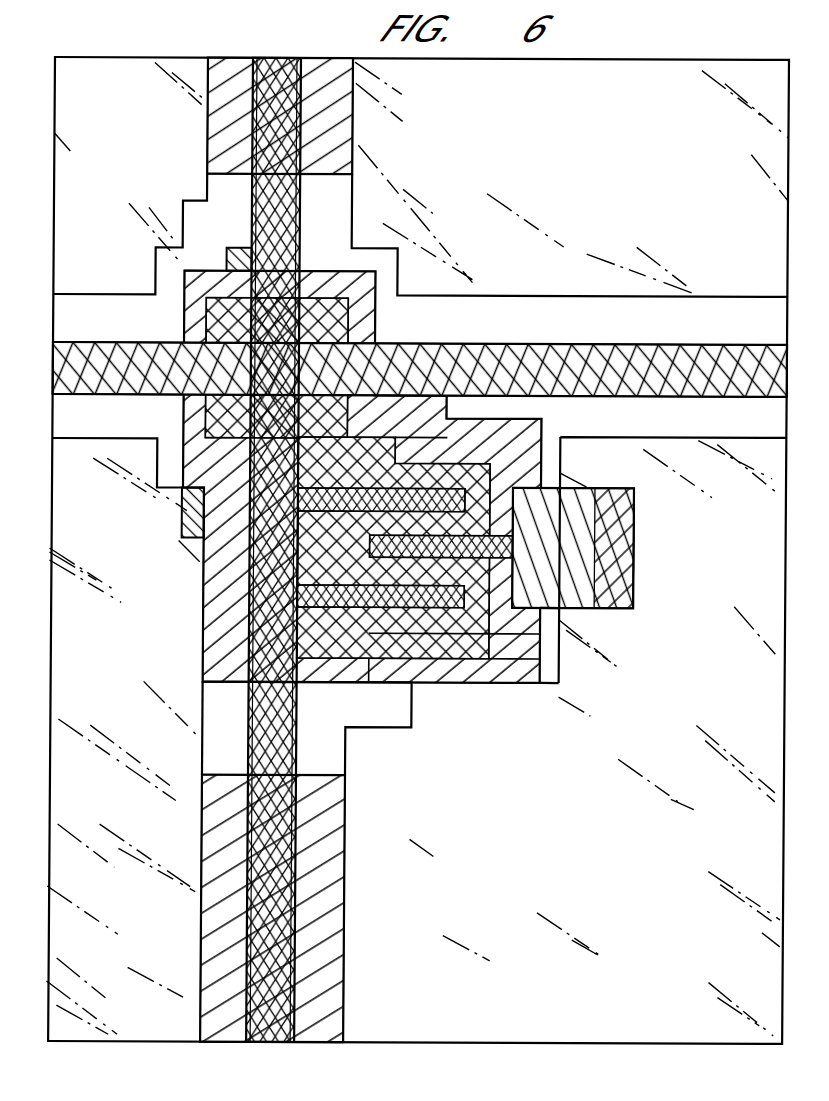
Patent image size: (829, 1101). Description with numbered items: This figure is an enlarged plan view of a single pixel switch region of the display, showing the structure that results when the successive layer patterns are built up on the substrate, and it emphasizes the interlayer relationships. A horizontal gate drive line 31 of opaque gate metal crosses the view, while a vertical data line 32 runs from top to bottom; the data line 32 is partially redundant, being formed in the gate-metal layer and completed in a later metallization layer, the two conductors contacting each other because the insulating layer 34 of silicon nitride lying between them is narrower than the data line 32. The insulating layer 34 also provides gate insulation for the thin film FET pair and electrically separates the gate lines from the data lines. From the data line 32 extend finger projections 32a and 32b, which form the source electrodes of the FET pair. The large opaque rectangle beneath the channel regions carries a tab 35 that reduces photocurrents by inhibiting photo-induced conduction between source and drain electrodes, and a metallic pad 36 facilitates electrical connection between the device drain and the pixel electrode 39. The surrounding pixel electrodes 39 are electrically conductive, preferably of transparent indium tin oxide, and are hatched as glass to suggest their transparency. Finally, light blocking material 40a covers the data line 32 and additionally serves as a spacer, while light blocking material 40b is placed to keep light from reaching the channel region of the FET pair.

The horizontal gate drive line 31 is at (54, 364).
The data line 32 is at (281, 58).
The finger projection (source electrode) 32a is at (322, 488).
The finger projection (source electrode) 32b is at (325, 605).
The insulating layer 34 is at (188, 318).
The tab 35 is at (355, 683).
The metallic pad 36 is at (630, 548).
The pixel electrode 39 is at (130, 120).
The light blocking material 40a is at (324, 174).
The light blocking material 40b is at (360, 270).